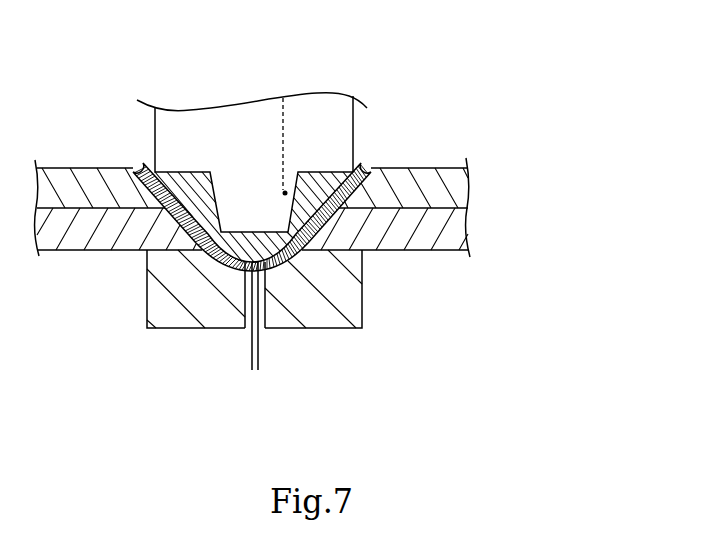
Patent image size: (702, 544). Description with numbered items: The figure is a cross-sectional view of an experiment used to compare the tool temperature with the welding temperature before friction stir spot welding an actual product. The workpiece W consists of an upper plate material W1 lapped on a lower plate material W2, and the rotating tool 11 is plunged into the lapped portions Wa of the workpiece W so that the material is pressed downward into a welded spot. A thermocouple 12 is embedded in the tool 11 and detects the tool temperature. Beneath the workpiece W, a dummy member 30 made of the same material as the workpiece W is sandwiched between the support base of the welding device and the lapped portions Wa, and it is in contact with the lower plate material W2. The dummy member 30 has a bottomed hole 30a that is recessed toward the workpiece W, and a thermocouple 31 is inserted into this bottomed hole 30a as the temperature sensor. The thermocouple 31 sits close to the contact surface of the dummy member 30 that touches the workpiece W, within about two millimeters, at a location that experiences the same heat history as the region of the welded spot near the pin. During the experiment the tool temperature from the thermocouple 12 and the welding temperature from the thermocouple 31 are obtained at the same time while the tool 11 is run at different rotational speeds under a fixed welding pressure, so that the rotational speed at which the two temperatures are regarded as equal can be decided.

The tool 11 is at (155, 117).
The thermocouple 12 is at (285, 193).
The lapped portions Wa is at (410, 168).
The upper plate material W1 is at (456, 185).
The lower plate material W2 is at (463, 227).
The workpiece W is at (563, 166).
The dummy member 30 is at (362, 298).
The bottomed hole 30a is at (266, 304).
The thermocouple 31 is at (240, 265).